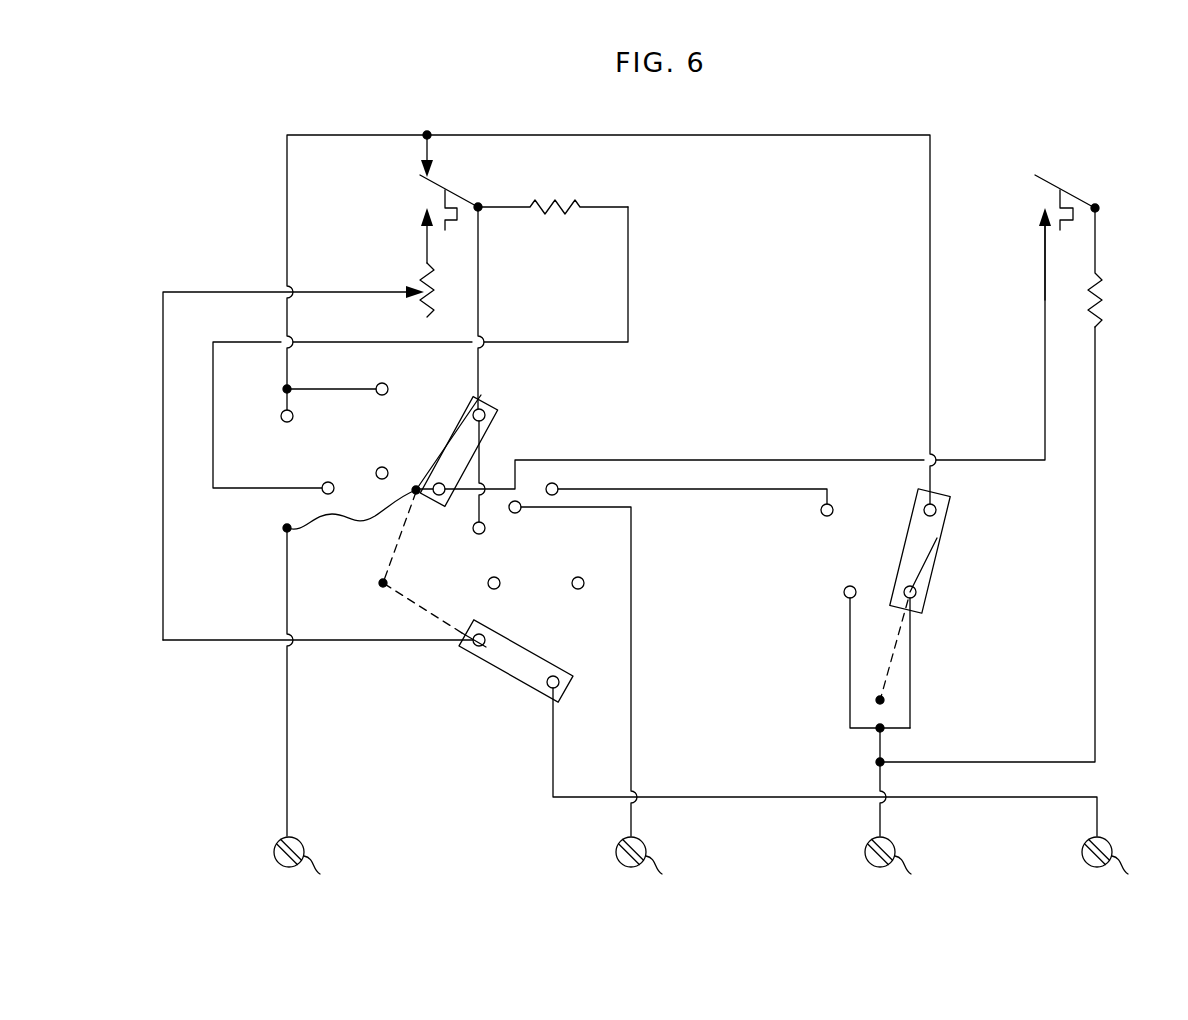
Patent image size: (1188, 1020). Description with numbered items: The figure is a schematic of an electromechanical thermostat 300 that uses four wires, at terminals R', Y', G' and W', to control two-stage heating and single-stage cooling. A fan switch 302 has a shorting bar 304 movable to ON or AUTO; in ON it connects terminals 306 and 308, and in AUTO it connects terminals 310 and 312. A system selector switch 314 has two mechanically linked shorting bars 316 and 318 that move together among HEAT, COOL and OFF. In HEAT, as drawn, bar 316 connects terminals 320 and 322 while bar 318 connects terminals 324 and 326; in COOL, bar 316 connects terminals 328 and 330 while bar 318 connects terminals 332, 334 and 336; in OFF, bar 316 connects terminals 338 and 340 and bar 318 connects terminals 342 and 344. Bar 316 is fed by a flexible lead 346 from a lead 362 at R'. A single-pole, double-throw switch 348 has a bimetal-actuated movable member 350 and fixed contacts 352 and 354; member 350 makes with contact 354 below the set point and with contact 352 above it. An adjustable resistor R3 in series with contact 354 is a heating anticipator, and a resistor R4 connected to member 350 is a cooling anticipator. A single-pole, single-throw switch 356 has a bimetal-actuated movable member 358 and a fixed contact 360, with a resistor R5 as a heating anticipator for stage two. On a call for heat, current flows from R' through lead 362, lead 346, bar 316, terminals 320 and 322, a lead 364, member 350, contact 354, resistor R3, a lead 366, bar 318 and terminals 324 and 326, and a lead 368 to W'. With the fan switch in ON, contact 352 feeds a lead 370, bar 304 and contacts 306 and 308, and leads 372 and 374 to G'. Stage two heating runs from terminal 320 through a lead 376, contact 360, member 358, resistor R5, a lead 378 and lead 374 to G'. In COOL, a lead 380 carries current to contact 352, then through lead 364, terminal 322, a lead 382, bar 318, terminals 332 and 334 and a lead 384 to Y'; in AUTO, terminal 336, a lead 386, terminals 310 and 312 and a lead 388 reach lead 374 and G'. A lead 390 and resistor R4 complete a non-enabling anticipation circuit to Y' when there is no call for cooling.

The electromechanical thermostat 300 is at (724, 124).
The fan switch 302 is at (970, 549).
The shorting bar 304 is at (928, 584).
The terminal 306 is at (938, 510).
The terminal 308 is at (917, 594).
The terminal 310 is at (834, 506).
The terminal 312 is at (845, 597).
The system selector switch 314 is at (545, 424).
The shorting bar 316 is at (491, 455).
The shorting bar 318 is at (368, 605).
The terminal 320 is at (416, 497).
The terminal 322 is at (473, 405).
The terminal 324 is at (470, 648).
The terminal 326 is at (548, 688).
The terminal 328 is at (324, 494).
The terminal 330 is at (281, 413).
The terminal 332 is at (479, 534).
The terminal 334 is at (522, 504).
The terminal 336 is at (558, 484).
The terminal 338 is at (380, 383).
The terminal 340 is at (388, 477).
The terminal 342 is at (488, 583).
The terminal 344 is at (573, 587).
The flexible lead 346 is at (350, 522).
The single-pole, double-throw switch 348 is at (428, 228).
The movable member 350 is at (452, 190).
The fixed contact 352 is at (436, 168).
The fixed contact 354 is at (420, 222).
The single-pole, single-throw switch 356 is at (1024, 221).
The movable member 358 is at (1043, 174).
The fixed contact 360 is at (1045, 236).
The lead 362 is at (286, 758).
The lead 364 is at (480, 276).
The lead 366 is at (163, 490).
The lead 368 is at (726, 796).
The lead 370 is at (752, 137).
The lead 372 is at (912, 697).
The lead 374 is at (882, 826).
The lead 376 is at (732, 459).
The lead 378 is at (1097, 598).
The lead 380 is at (286, 208).
The lead 382 is at (488, 466).
The lead 384 is at (633, 688).
The lead 386 is at (760, 493).
The lead 388 is at (850, 655).
The lead 390 is at (629, 276).
The adjustable resistor R3 is at (416, 280).
The resistor R4 is at (575, 200).
The resistor R5 is at (1102, 308).